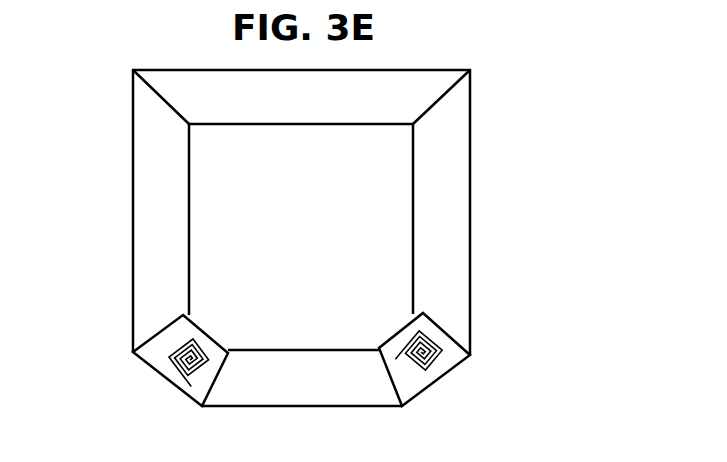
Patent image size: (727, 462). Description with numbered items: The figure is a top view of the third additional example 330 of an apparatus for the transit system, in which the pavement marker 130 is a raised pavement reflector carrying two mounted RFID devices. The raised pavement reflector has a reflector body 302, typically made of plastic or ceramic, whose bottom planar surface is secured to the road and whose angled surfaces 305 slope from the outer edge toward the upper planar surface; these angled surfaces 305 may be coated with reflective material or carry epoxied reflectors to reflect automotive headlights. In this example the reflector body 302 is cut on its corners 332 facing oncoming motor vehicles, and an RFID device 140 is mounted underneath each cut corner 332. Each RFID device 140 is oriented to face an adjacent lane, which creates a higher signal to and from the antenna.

The pavement marker 130 is at (132, 177).
The reflector body 302 is at (132, 247).
The angled surfaces 305 is at (443, 220).
The third additional example 330 is at (521, 144).
The RFID device 140 is at (168, 370).
The cut corners 332 is at (188, 396).